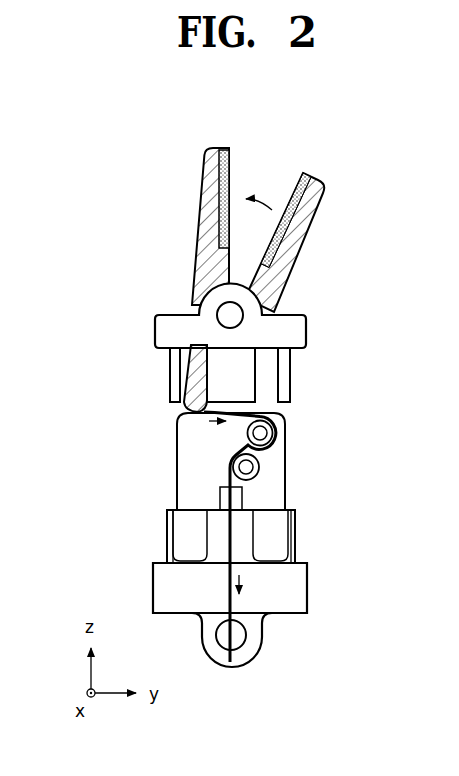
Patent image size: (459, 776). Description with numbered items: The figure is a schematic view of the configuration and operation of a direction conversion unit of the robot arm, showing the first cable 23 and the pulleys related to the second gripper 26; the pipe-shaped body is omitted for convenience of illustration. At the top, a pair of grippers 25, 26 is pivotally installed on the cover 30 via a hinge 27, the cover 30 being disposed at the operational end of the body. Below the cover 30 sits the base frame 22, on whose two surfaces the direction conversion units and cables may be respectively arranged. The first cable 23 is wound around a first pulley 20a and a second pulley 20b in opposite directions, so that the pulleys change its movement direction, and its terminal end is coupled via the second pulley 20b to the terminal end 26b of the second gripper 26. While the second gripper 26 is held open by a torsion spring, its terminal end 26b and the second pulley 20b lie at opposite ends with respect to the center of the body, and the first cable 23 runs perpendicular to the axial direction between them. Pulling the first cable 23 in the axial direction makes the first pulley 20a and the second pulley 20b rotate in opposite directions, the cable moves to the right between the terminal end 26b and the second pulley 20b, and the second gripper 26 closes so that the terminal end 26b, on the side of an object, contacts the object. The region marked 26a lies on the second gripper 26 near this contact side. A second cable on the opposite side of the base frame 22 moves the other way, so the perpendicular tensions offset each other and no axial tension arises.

The first pulley 20a is at (254, 468).
The second pulley 20b is at (274, 432).
The base frame 22 is at (183, 485).
The first cable 23 is at (228, 612).
The gripper 25 is at (205, 205).
The second gripper 26 is at (306, 228).
The contact pad of second arm 26a is at (302, 183).
The terminal end of the second gripper 26b is at (188, 408).
The hinge 27 is at (228, 313).
The cover 30 is at (160, 334).